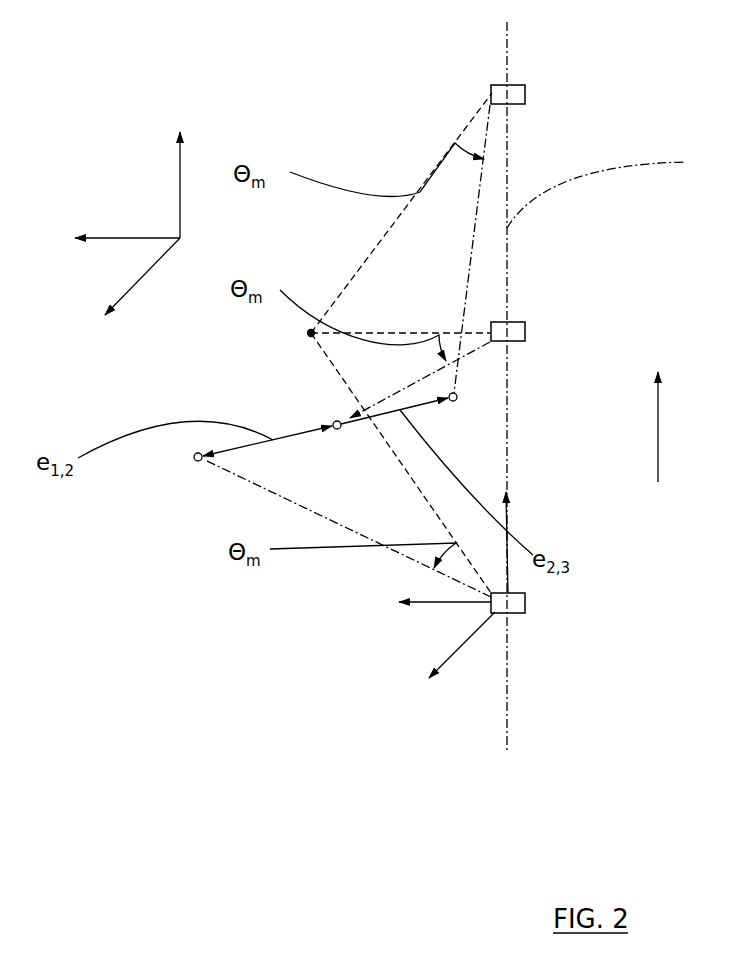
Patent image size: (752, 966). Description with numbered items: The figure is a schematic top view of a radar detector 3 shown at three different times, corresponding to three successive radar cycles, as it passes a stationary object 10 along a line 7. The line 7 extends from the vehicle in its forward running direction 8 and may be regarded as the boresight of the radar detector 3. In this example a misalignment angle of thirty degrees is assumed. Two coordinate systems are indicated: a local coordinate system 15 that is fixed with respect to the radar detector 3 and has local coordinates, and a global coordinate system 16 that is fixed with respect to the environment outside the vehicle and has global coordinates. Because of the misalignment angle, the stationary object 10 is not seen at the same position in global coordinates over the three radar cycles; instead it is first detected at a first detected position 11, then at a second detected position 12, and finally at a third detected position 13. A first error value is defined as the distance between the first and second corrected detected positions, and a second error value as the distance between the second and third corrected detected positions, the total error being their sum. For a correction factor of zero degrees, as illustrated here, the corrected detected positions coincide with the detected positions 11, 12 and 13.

The radar detector 3 is at (515, 95).
The line 7 is at (608, 190).
The forward running direction 8 is at (658, 430).
The stationary object 10 is at (308, 334).
The first detected position 11 is at (196, 459).
The second detected position 12 is at (337, 421).
The third detected position 13 is at (457, 402).
The local coordinate system 15 is at (456, 624).
The global coordinate system 16 is at (121, 184).